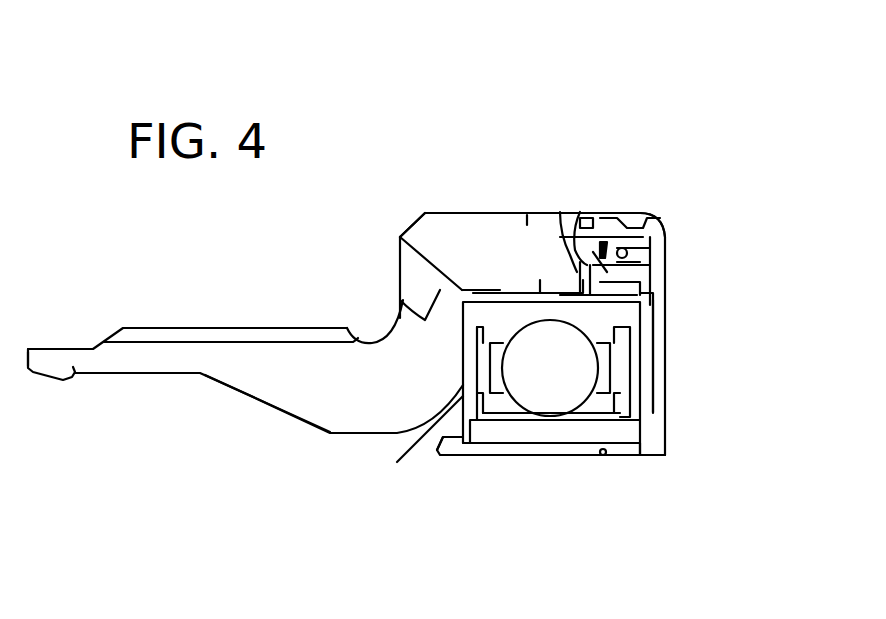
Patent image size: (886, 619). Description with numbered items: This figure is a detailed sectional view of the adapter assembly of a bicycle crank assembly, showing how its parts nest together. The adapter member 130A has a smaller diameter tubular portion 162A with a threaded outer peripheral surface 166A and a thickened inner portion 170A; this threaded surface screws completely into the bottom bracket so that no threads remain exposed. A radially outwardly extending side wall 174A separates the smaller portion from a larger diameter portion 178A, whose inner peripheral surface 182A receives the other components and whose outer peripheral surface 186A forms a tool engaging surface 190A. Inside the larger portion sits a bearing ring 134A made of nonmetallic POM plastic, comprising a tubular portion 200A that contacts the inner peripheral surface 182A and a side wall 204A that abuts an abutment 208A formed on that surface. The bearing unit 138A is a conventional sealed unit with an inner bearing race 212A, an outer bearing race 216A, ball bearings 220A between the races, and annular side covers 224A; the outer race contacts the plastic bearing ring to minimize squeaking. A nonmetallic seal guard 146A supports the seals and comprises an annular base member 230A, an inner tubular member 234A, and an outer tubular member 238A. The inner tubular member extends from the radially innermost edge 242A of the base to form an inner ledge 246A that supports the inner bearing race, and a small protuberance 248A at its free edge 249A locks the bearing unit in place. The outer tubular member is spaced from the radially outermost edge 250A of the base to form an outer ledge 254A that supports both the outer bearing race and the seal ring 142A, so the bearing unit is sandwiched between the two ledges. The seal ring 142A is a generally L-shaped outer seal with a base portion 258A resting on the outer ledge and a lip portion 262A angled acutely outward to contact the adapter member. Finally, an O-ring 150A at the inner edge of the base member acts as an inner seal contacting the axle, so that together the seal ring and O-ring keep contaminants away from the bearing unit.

The adapter member 130A is at (166, 376).
The smaller diameter tubular portion 162A is at (73, 368).
The threaded outer peripheral surface 166A is at (177, 327).
The thickened inner portion 170A is at (320, 390).
The side wall 174A is at (402, 318).
The outer bearing race 216A is at (400, 240).
The larger diameter portion 178A is at (453, 237).
The inner peripheral surface 182A is at (500, 287).
The bearing ring 134A is at (518, 290).
The outer peripheral surface 186A is at (527, 220).
The tubular portion 200A is at (538, 290).
The abutment 208A is at (577, 208).
The side wall 204A is at (592, 212).
The seal ring 142A is at (610, 212).
The tool engaging surface 190A is at (647, 213).
The lip portion 262A is at (647, 237).
The radially outermost edge 250A is at (647, 253).
The base portion 258A is at (647, 270).
The outer ledge 254A is at (647, 283).
The outer tubular member 238A is at (647, 292).
The seal guard 146A is at (668, 375).
The annular base member 230A is at (667, 333).
The O-ring 150A is at (667, 463).
The radially innermost edge 242A is at (640, 455).
The inner tubular member 234A is at (608, 455).
The bearing unit 138A is at (461, 360).
The ball bearings 220A is at (540, 397).
The annular side covers 224A is at (470, 408).
The inner bearing race 212A is at (508, 425).
The inner ledge 246A is at (547, 450).
The protuberance 248A is at (448, 450).
The free edge 249A is at (437, 453).